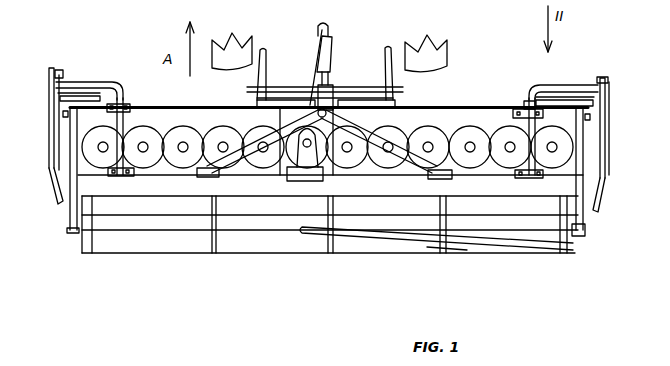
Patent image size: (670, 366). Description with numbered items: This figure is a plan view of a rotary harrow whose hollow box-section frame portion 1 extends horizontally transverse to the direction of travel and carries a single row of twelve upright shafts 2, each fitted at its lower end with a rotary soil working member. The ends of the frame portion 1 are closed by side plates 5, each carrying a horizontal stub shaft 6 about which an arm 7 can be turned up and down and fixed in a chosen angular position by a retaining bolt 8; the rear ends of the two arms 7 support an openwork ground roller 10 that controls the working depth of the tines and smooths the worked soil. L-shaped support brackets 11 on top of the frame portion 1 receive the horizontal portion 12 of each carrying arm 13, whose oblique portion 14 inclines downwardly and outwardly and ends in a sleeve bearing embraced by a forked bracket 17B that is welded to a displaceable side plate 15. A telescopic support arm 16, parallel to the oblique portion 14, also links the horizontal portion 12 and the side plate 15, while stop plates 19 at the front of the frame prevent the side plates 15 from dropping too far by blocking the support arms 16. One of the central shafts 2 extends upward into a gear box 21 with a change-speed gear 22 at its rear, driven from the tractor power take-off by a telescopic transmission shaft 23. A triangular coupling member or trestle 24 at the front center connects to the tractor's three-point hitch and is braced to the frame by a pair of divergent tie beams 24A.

The hollow box-section frame portion 1 is at (435, 92).
The shafts 2 is at (185, 140).
The side plates 5 is at (72, 140).
The stub shaft 6 is at (63, 114).
The arm 7 is at (70, 217).
The retaining bolt 8 is at (60, 182).
The ground roller 10 is at (322, 257).
The support brackets 11 is at (128, 108).
The horizontal portion 12 is at (134, 176).
The carrying arm 13 is at (126, 76).
The oblique portion 14 is at (86, 92).
The displaceable side plate 15 is at (48, 97).
The telescopic support arm 16 is at (110, 84).
The forked bracket 17B is at (62, 70).
The stop plates 19 is at (526, 108).
The gear box 21 is at (330, 165).
The change-speed gear 22 is at (302, 181).
The telescopic transmission shaft 23 is at (317, 52).
The coupling member or trestle 24 is at (352, 100).
The tie beams 24A is at (229, 172).